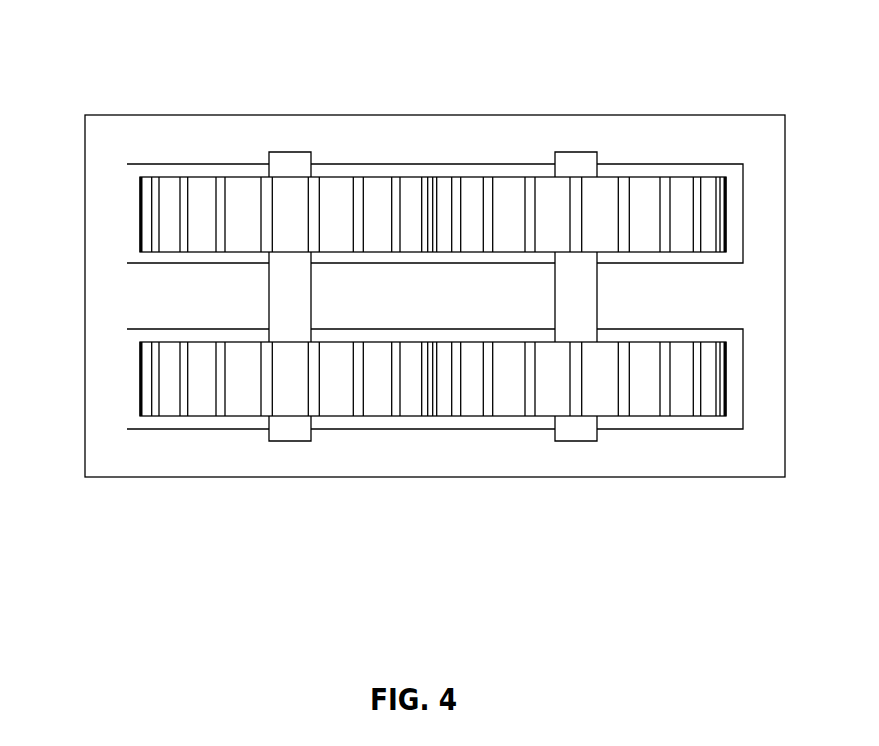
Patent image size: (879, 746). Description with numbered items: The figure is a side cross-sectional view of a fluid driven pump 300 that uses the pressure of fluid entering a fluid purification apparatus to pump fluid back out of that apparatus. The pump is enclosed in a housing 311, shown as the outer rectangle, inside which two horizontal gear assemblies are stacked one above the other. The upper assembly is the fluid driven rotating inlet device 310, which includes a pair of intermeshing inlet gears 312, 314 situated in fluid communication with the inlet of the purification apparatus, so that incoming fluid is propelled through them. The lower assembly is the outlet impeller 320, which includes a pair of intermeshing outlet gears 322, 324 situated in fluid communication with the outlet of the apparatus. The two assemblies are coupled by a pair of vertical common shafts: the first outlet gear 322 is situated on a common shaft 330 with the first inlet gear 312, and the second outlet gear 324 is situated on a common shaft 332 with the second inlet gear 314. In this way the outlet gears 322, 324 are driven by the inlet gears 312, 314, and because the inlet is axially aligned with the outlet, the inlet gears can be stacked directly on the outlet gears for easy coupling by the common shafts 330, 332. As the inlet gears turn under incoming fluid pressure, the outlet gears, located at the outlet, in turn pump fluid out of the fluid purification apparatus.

The fluid driven pump 300 is at (705, 78).
The fluid driven rotating inlet device 310 is at (434, 159).
The housing 311 is at (579, 478).
The first inlet gear 312 is at (140, 213).
The second inlet gear 314 is at (727, 213).
The outlet impeller 320 is at (434, 436).
The first outlet gear 322 is at (140, 379).
The second outlet gear 324 is at (727, 379).
The common shaft 330 is at (289, 152).
The common shaft 332 is at (577, 152).